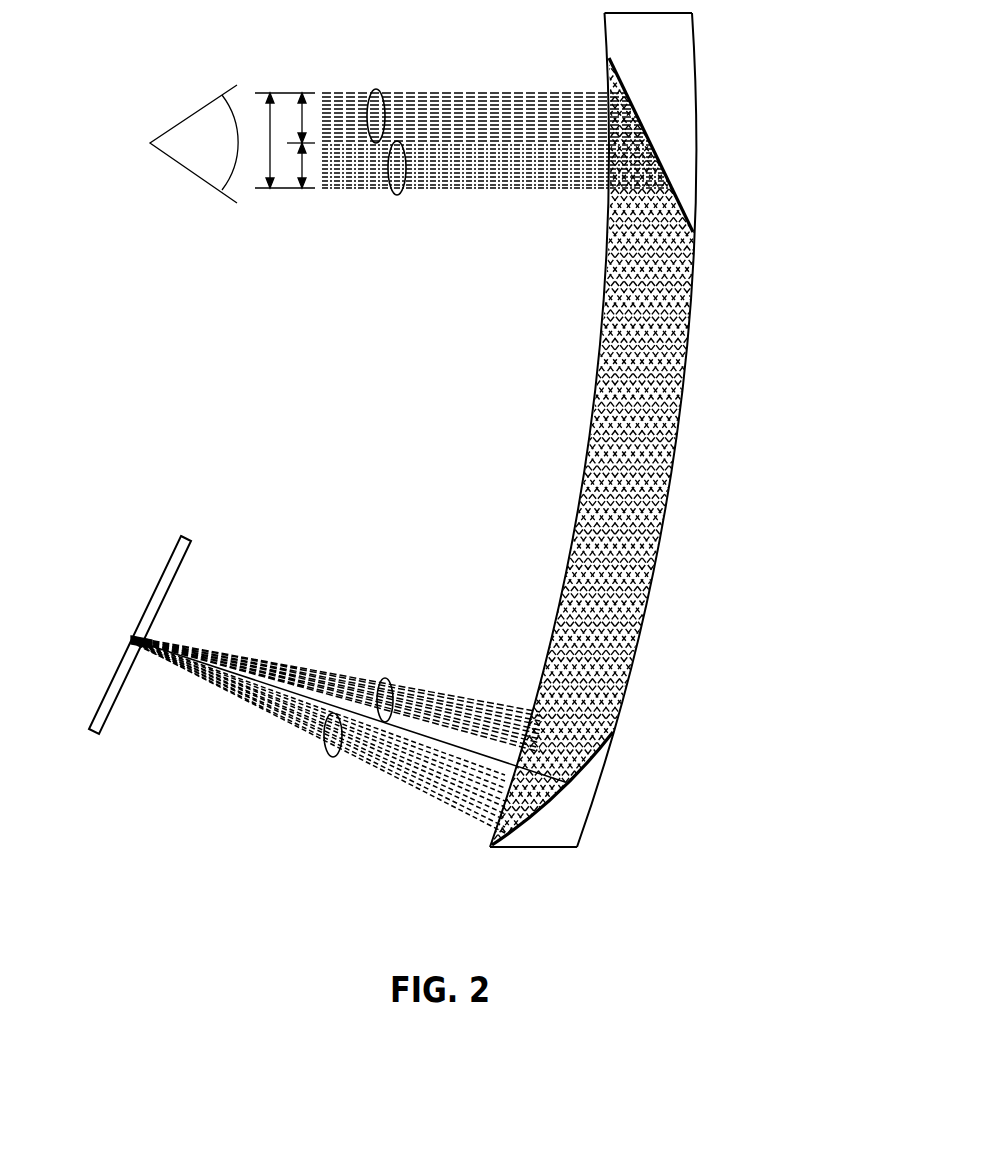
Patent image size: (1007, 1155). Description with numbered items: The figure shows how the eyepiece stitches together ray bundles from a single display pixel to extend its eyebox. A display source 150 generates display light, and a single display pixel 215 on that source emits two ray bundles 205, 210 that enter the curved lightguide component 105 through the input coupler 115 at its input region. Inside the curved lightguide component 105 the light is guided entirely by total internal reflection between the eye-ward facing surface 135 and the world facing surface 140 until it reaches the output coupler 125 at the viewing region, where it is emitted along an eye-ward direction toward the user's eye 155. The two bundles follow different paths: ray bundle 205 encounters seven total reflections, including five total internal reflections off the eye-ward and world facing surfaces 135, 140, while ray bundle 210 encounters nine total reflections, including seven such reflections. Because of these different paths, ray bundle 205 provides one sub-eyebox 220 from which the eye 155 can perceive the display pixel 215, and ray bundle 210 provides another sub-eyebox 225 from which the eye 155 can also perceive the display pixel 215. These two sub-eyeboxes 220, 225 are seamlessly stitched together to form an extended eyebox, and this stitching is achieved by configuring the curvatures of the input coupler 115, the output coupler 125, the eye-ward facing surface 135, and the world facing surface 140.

The curved lightguide component 105 is at (503, 446).
The input coupler 115 is at (570, 782).
The output coupler 125 is at (663, 153).
The eye-ward facing surface 135 is at (577, 503).
The world facing surface 140 is at (680, 420).
The display source 150 is at (185, 537).
The eye 155 is at (216, 152).
The ray bundle 205 is at (397, 197).
The ray bundle 210 is at (373, 90).
The display pixel 215 is at (268, 131).
The eyebox 220 is at (300, 190).
The sub-eyebox 225 is at (297, 92).